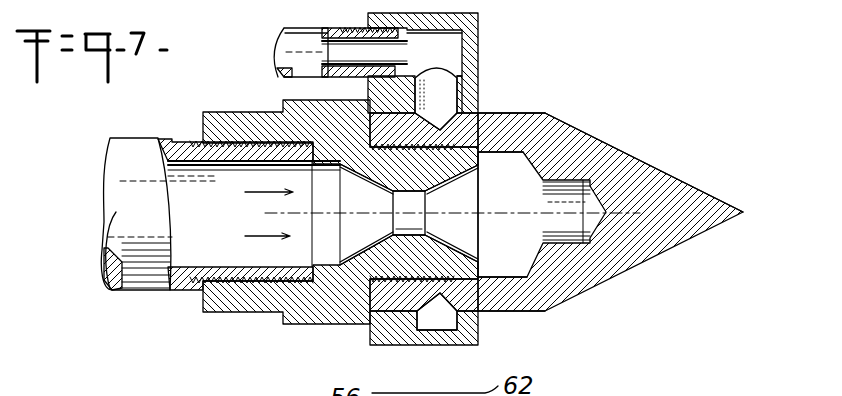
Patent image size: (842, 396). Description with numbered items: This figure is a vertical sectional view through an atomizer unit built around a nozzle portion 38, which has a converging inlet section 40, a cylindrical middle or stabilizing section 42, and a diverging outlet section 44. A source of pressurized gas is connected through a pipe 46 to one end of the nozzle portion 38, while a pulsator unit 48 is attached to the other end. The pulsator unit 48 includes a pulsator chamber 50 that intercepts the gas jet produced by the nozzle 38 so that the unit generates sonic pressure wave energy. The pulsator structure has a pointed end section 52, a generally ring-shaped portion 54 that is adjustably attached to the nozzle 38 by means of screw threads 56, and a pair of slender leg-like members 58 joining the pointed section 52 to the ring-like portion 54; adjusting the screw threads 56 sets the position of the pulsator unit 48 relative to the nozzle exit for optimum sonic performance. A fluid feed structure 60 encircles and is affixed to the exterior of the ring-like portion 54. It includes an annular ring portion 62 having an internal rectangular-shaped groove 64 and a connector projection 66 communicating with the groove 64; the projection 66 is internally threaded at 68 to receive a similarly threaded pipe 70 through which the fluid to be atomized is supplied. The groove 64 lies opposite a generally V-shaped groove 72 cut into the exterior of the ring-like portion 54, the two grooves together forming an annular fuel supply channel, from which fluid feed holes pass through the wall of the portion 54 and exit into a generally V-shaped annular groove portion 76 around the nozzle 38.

The nozzle portion 38 is at (348, 334).
The converging inlet section 40 is at (374, 209).
The cylindrical middle or stabilizing section 42 is at (418, 224).
The diverging outlet section 44 is at (460, 206).
The pipe 46 is at (143, 140).
The pulsator unit 48 is at (573, 98).
The pulsator chamber 50 is at (553, 226).
The pointed end section 52 is at (649, 166).
The ring-shaped portion 54 is at (540, 112).
The screw threads 56 is at (385, 133).
The slender leg-like members 58 is at (516, 151).
The fluid feed structure 60 is at (492, 37).
The annular ring portion 62 is at (480, 94).
The internal rectangular-shaped groove 64 is at (452, 331).
The connector projection 66 is at (455, 58).
The internal threads 68 is at (365, 33).
The pipe 70 is at (285, 28).
The V-shaped groove 72 is at (428, 305).
The V-shaped annular groove portion 76 is at (480, 155).